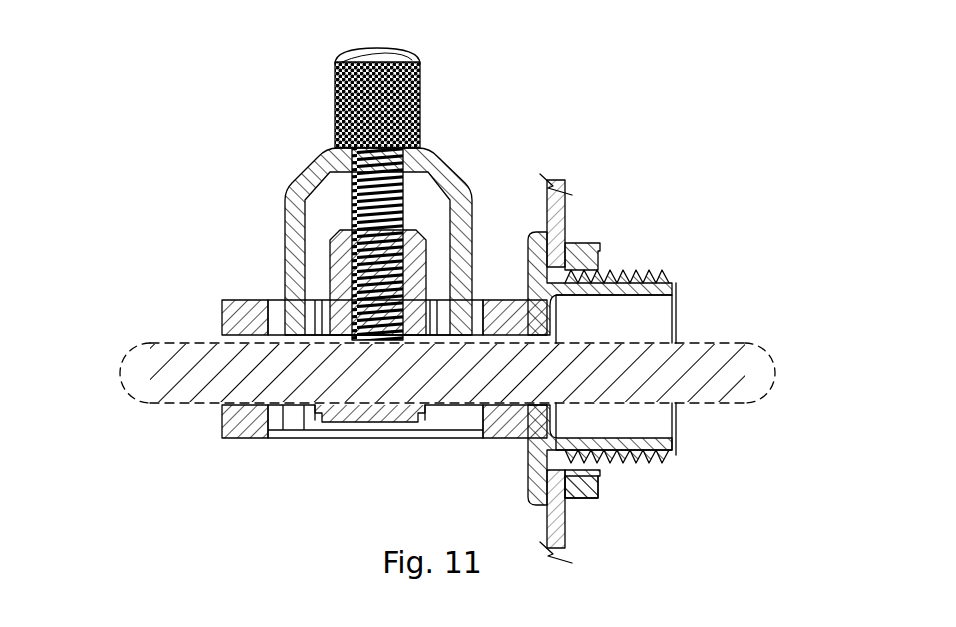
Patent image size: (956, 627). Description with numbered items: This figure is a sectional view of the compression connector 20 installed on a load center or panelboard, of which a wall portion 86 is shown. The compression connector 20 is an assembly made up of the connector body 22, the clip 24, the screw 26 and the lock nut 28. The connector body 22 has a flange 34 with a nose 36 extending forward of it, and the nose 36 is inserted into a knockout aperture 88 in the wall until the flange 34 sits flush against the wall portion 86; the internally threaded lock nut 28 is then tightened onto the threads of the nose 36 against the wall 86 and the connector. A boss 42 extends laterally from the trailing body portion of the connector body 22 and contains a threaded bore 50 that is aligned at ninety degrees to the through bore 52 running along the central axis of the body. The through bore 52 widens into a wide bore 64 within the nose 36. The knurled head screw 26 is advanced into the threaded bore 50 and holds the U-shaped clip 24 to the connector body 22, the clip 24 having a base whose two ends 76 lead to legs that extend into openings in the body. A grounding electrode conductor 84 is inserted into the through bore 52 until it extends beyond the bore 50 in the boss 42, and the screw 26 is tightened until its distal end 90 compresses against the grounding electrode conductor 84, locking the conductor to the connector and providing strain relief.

The compression connector 20 is at (205, 118).
The connector body 22 is at (248, 440).
The clip 24 is at (300, 160).
The screw 26 is at (332, 105).
The lock nut 28 is at (583, 243).
The flange 34 is at (530, 231).
The nose 36 is at (672, 283).
The boss 42 is at (288, 250).
The threaded bore 50 is at (406, 224).
The through bore 52 is at (222, 332).
The wide bore 64 is at (624, 327).
The ends 76 is at (343, 340).
The grounding electrode conductor 84 is at (705, 403).
The wall portion 86 is at (560, 215).
The knockout aperture 88 is at (545, 472).
The distal end 90 is at (372, 340).